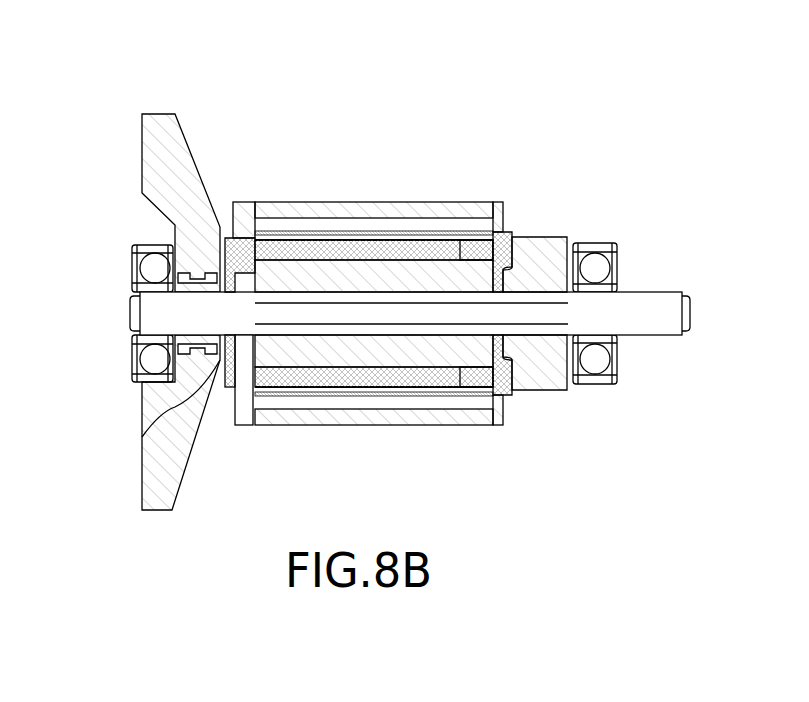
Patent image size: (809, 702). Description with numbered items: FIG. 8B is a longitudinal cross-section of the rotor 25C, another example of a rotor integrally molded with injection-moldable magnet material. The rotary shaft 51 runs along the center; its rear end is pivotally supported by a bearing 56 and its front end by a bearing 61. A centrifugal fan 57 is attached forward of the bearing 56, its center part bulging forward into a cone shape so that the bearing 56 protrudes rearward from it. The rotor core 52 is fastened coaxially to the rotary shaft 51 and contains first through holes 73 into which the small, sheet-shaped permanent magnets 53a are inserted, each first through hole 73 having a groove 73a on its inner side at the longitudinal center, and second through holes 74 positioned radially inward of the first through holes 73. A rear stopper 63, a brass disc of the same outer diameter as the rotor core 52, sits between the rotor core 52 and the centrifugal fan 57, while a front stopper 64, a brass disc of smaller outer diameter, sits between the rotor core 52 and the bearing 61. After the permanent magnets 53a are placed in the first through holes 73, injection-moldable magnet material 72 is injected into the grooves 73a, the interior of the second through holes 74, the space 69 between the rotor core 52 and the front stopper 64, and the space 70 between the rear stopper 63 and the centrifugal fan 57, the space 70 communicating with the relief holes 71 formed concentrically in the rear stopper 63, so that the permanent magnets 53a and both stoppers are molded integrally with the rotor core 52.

The rotor 25C is at (387, 284).
The rotary shaft 51 is at (668, 315).
The rotor core 52 is at (317, 212).
The permanent magnet 53a is at (377, 218).
The bearing 56 is at (150, 270).
The centrifugal fan 57 is at (152, 128).
The bearing 61 is at (597, 267).
The rear stopper 63 is at (240, 237).
The front stopper 64 is at (545, 253).
The space 69 is at (502, 395).
The space 70 is at (232, 388).
The relief hole 71 is at (232, 238).
The injection-moldable magnet material 72 is at (347, 250).
The first through hole 73 is at (466, 220).
The groove 73a is at (470, 238).
The second through hole 74 is at (307, 245).